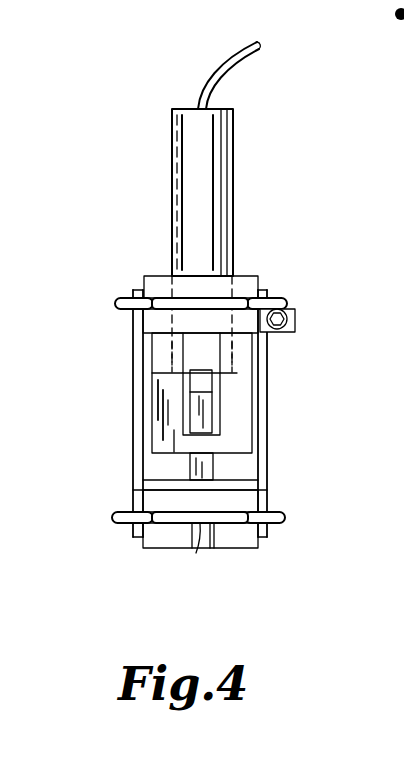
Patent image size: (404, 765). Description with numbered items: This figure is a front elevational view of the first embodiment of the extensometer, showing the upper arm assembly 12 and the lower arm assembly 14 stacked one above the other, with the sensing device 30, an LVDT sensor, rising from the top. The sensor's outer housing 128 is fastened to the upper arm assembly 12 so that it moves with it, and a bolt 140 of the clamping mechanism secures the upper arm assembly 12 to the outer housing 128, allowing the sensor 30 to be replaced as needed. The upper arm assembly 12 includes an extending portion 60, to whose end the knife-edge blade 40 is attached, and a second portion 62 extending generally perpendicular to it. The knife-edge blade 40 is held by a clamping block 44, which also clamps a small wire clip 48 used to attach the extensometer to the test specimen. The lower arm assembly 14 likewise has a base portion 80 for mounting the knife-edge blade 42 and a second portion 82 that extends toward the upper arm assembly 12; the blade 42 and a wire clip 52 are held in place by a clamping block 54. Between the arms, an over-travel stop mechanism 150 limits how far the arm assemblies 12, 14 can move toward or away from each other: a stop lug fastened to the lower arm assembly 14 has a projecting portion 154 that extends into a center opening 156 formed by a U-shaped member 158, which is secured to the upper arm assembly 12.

The upper arm assembly 12 is at (330, 252).
The lower arm assembly 14 is at (331, 539).
The sensing device 30 is at (270, 104).
The knife-edge blade 40 is at (145, 254).
The knife-edge blade 42 is at (164, 565).
The clamping block 44 is at (233, 290).
The wire clip 48 is at (170, 293).
The wire clip 52 is at (169, 524).
The clamping block 54 is at (214, 564).
The extending portion 60 is at (158, 328).
The second portion 62 is at (163, 413).
The base portion 80 is at (250, 497).
The second portion 82 is at (249, 465).
The outer housing 128 is at (250, 192).
The bolt 140 is at (330, 301).
The over-travel stop mechanism 150 is at (85, 384).
The projecting portion 154 is at (277, 380).
The center opening 156 is at (281, 397).
The U-shaped member 158 is at (258, 393).